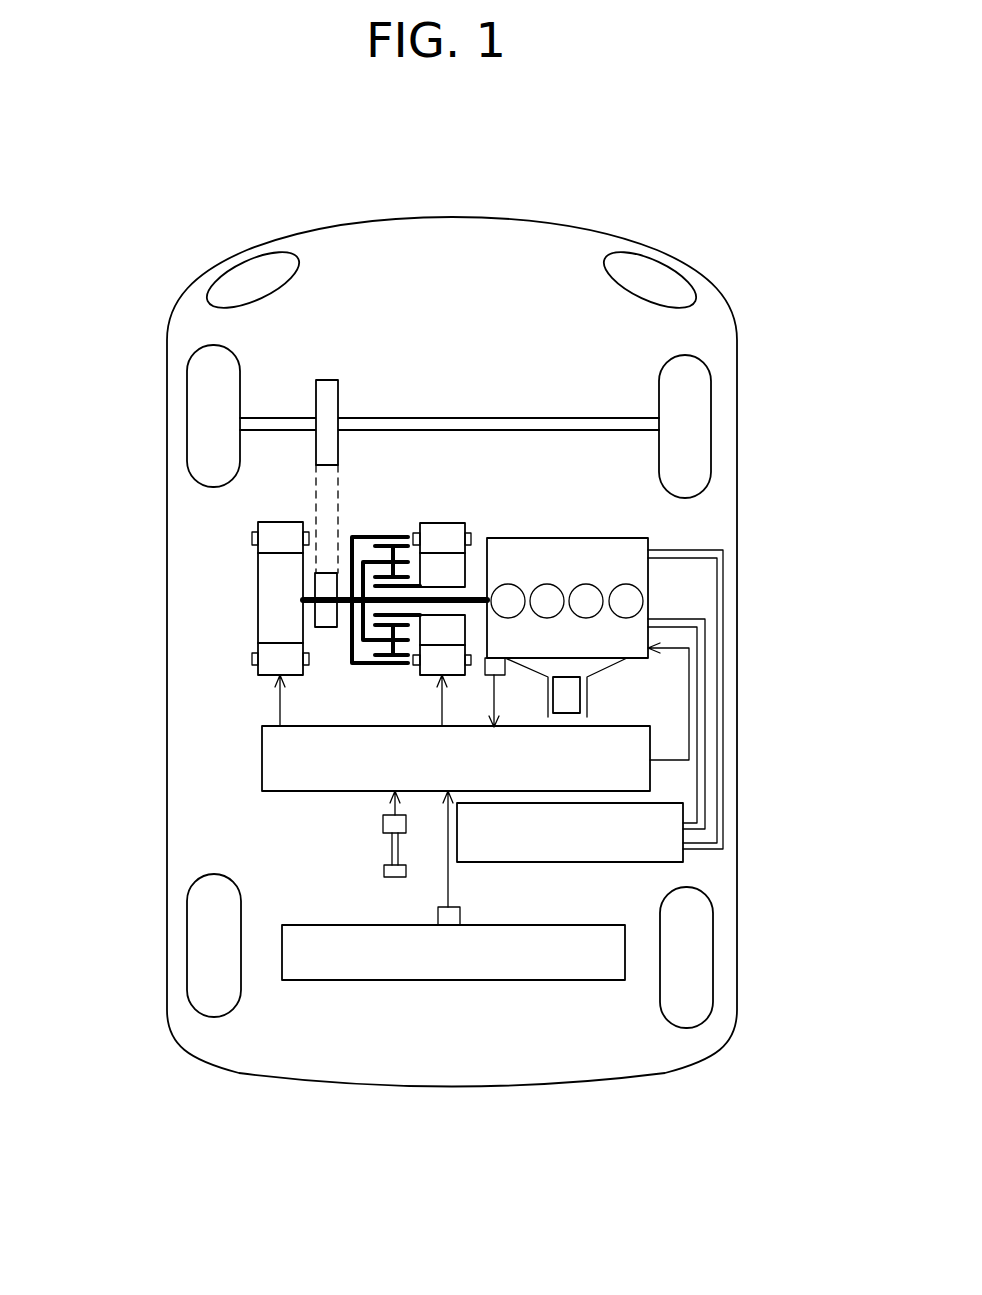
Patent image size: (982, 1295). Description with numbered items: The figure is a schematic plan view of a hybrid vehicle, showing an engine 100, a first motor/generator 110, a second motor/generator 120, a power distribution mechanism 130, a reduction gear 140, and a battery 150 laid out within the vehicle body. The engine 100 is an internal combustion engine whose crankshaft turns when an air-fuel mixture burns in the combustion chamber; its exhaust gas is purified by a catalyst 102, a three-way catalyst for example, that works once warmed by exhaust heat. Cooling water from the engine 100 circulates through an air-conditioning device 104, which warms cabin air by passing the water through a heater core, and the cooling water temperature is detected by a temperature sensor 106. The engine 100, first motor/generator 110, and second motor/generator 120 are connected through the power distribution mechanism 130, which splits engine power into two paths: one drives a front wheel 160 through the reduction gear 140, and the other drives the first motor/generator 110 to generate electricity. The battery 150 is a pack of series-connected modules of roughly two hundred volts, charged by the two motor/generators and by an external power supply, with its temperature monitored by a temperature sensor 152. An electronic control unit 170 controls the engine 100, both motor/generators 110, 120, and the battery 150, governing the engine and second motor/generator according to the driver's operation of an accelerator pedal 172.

The engine 100 is at (518, 538).
The catalyst 102 is at (580, 698).
The air-conditioning device 104 is at (607, 863).
The temperature sensor 106 is at (505, 663).
The first motor/generator 110 is at (445, 523).
The second motor/generator 120 is at (258, 598).
The power distribution mechanism 130 is at (382, 537).
The reduction gear 140 is at (327, 363).
The battery 150 is at (420, 982).
The temperature sensor 152 is at (460, 914).
The front wheel 160 is at (187, 423).
The electronic control unit (ECU) 170 is at (262, 761).
The accelerator pedal 172 is at (383, 825).